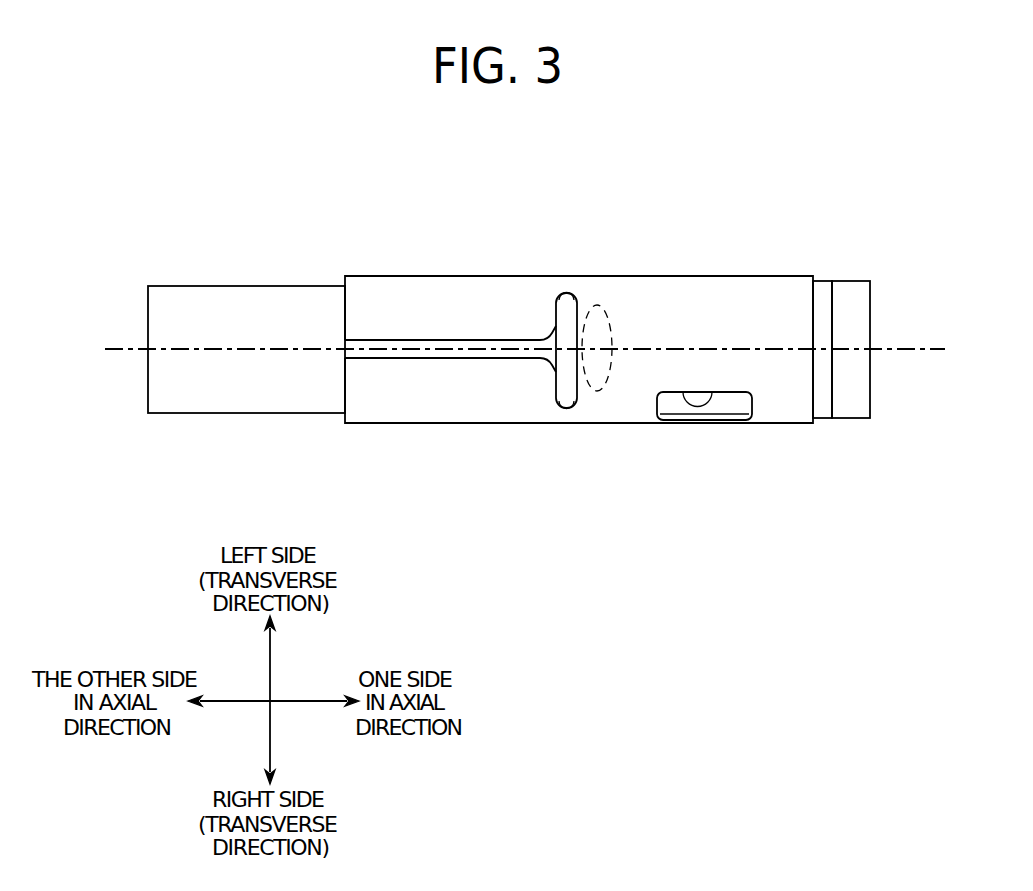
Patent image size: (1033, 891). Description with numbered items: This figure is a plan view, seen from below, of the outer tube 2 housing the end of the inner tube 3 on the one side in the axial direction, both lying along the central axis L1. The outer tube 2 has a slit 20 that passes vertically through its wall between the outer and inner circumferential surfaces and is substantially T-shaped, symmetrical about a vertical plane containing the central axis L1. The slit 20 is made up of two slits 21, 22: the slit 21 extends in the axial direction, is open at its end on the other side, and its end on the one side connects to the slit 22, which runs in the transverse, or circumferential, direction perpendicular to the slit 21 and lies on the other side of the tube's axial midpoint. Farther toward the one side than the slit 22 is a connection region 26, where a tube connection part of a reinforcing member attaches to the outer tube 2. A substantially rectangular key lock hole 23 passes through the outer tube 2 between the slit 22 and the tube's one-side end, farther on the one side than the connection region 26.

The outer tube 2 is at (490, 408).
The inner tube 3 is at (297, 362).
The slit 20 is at (633, 193).
The slit 21 is at (490, 340).
The slit 22 is at (573, 335).
The key lock hole 23 is at (710, 403).
The connection region 26 is at (600, 392).
The central axis L1 is at (913, 349).